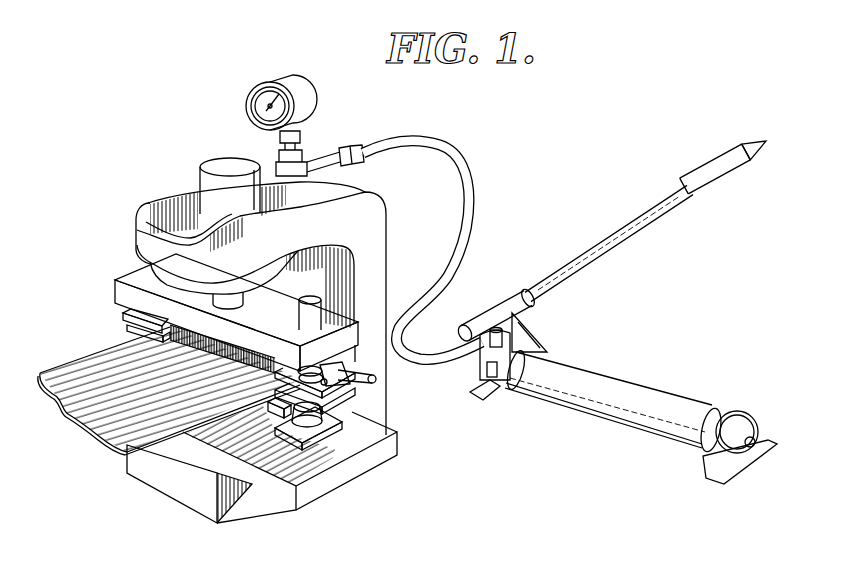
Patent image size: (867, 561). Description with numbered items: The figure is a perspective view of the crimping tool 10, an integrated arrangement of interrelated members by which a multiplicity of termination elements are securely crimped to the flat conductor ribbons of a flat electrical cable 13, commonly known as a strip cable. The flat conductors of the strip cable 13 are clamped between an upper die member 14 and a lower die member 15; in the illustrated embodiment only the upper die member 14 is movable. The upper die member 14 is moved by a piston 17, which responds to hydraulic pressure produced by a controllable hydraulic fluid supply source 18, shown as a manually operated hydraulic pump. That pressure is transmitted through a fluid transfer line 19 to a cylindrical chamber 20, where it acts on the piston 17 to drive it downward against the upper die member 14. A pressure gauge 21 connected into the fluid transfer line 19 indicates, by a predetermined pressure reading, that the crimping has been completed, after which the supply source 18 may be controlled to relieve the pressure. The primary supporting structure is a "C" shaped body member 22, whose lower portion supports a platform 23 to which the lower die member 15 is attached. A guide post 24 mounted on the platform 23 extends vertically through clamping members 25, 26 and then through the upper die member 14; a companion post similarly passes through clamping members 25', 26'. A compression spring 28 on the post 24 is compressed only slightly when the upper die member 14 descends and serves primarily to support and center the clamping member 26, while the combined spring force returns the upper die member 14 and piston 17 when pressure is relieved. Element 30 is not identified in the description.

The tool 10 is at (126, 197).
The flat electrical cable 13 is at (66, 353).
The upper die member 14 is at (133, 277).
The lower die member 15 is at (267, 415).
The piston 17 is at (238, 306).
The hydraulic fluid supply source 18 is at (617, 387).
The fluid transfer line 19 is at (465, 176).
The cylindrical chamber 20 is at (222, 166).
The pressure gauge 21 is at (308, 90).
The "C" shaped body member 22 is at (388, 232).
The platform 23 is at (316, 492).
The guide post 24 is at (321, 306).
The clamping member 25 is at (356, 382).
The clamping member 25' is at (167, 322).
The clamping member 26 is at (351, 400).
The clamping member 26' is at (113, 318).
The compression spring 28 is at (335, 422).
The locking pin handle 30 is at (352, 364).